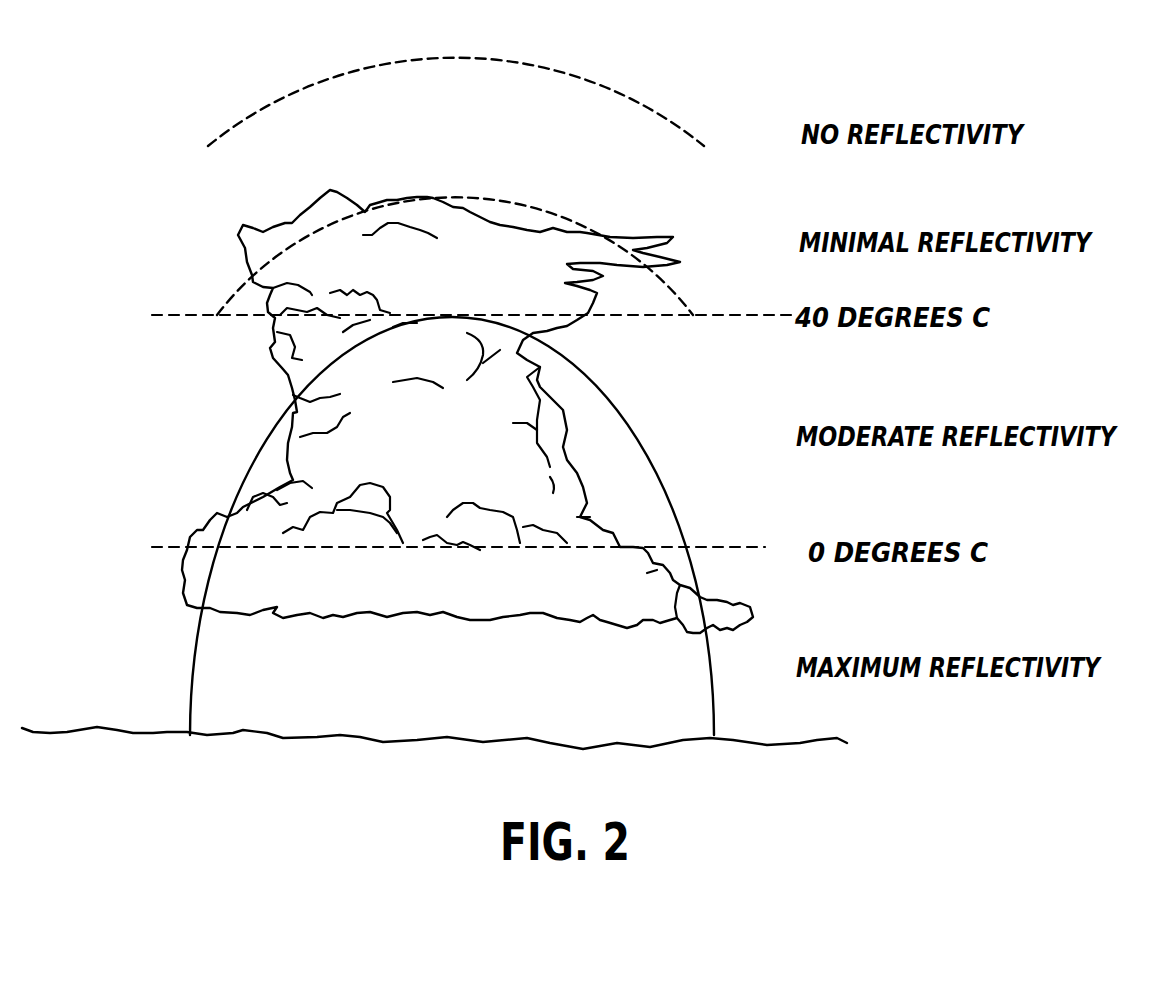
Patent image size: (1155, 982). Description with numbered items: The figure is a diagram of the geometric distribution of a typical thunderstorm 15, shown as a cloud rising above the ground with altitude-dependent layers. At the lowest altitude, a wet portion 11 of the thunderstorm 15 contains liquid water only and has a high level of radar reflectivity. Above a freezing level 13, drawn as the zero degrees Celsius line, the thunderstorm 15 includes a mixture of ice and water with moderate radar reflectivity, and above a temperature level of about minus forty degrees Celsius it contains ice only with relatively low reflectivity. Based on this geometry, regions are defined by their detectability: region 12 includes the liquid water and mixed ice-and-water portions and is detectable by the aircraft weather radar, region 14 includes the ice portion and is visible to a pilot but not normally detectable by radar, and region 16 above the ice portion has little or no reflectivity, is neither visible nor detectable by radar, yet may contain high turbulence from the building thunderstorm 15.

The wet portion of thunderstorm 11 is at (605, 631).
The radar-detectable region 12 is at (633, 436).
The freezing level 13 is at (720, 547).
The visible but non-detectable region 14 is at (547, 212).
The thunderstorm 15 is at (697, 78).
The region of little or no radar reflectivity 16 is at (555, 69).